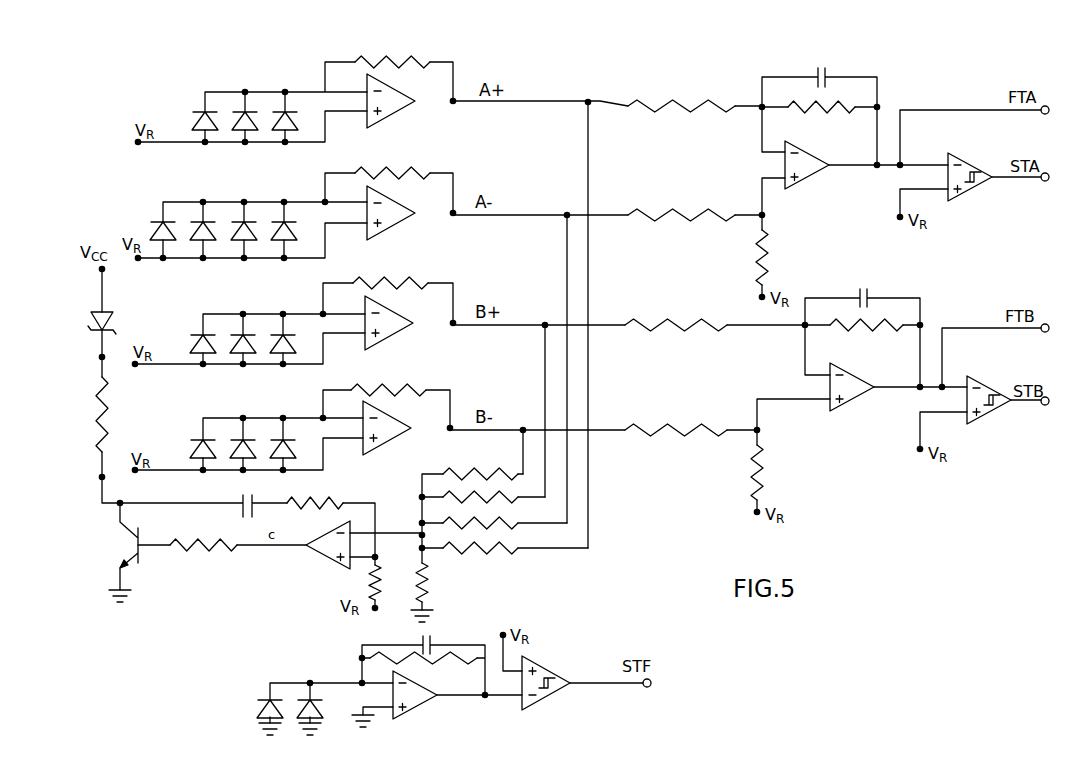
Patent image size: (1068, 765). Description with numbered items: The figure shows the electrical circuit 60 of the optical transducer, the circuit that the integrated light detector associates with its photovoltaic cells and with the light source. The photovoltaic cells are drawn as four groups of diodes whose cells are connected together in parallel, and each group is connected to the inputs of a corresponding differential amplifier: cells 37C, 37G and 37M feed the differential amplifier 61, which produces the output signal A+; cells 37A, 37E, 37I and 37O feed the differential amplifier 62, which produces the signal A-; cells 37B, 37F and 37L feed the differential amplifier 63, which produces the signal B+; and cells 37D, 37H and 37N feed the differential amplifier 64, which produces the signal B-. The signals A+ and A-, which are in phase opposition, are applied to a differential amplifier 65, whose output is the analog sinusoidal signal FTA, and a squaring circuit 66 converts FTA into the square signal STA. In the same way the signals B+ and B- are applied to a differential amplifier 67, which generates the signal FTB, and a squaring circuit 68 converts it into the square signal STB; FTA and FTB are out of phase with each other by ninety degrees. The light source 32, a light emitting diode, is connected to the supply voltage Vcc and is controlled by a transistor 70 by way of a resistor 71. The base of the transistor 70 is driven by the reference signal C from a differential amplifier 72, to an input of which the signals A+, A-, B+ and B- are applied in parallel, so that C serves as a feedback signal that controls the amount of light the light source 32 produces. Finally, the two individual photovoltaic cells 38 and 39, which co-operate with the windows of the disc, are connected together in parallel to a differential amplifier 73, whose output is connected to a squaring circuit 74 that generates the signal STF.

The light source 32 is at (112, 322).
The photovoltaic cell 37A is at (158, 238).
The photovoltaic cell 37B is at (198, 350).
The photovoltaic cell 37C is at (200, 118).
The photovoltaic cell 37D is at (198, 455).
The photovoltaic cell 37E is at (198, 232).
The photovoltaic cell 37F is at (238, 350).
The photovoltaic cell 37G is at (240, 118).
The photovoltaic cell 37H is at (238, 455).
The photovoltaic cell 37I is at (240, 232).
The photovoltaic cell 37L is at (278, 350).
The photovoltaic cell 37M is at (282, 118).
The photovoltaic cell 37N is at (278, 455).
The photovoltaic cell 37O is at (280, 232).
The individual photovoltaic cell 38 is at (262, 708).
The individual photovoltaic cell 39 is at (305, 708).
The electrical circuit 60 is at (660, 505).
The differential amplifier 61 is at (393, 108).
The differential amplifier 62 is at (387, 221).
The differential amplifier 63 is at (383, 330).
The differential amplifier 64 is at (377, 448).
The differential amplifier 65 is at (802, 175).
The squaring circuit 66 is at (965, 194).
The differential amplifier 67 is at (846, 405).
The squaring circuit 68 is at (985, 412).
The transistor 70 is at (148, 565).
The resistor 71 is at (108, 401).
The differential amplifier 72 is at (332, 559).
The differential amplifier 73 is at (415, 700).
The squaring circuit 74 is at (545, 675).